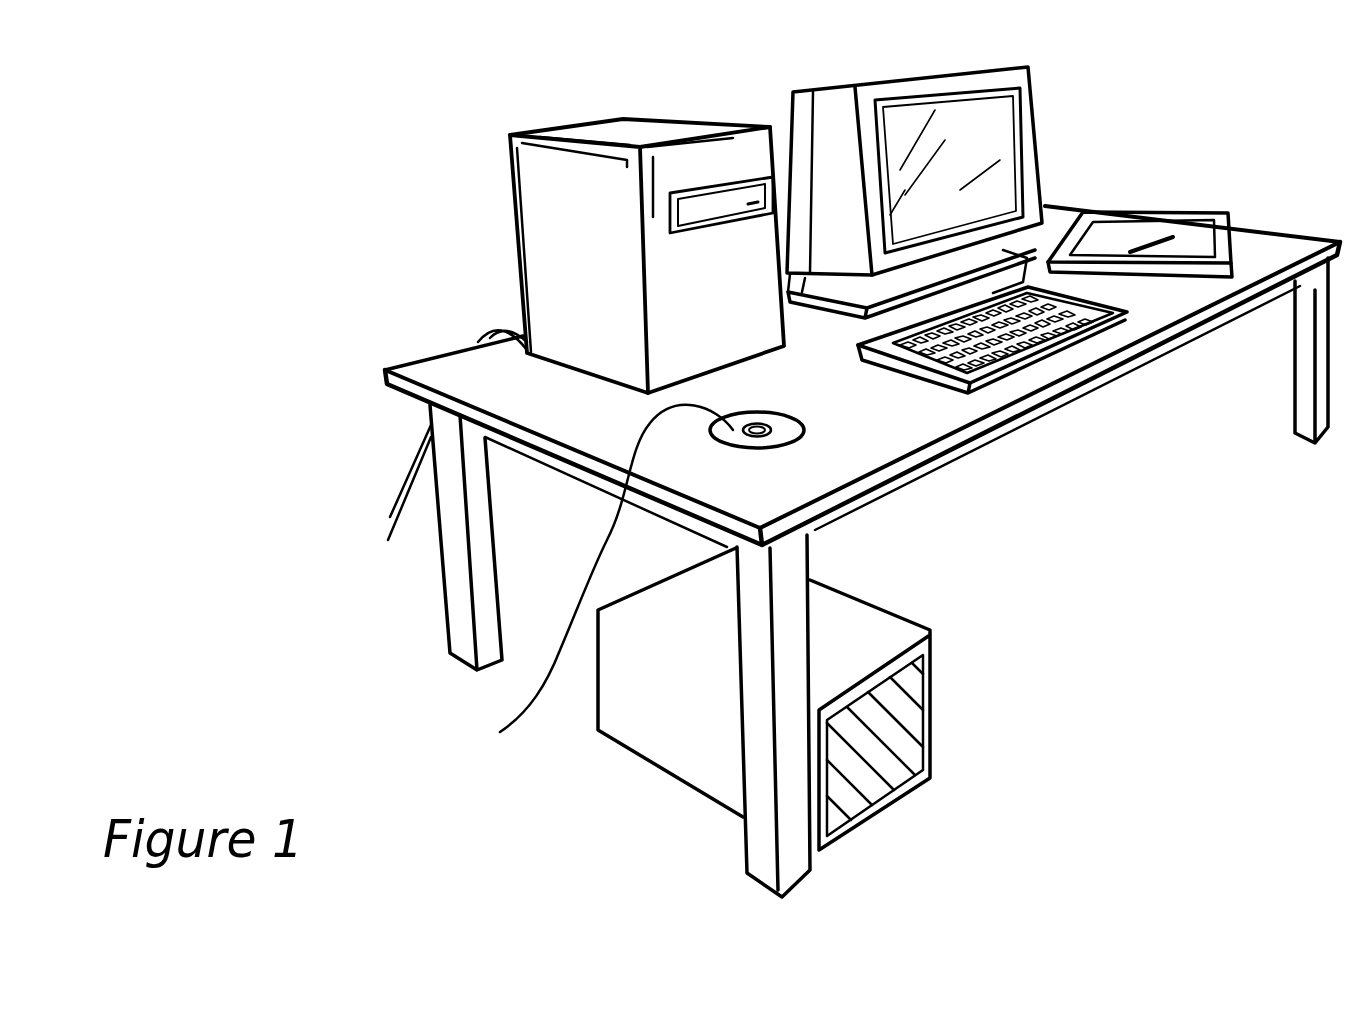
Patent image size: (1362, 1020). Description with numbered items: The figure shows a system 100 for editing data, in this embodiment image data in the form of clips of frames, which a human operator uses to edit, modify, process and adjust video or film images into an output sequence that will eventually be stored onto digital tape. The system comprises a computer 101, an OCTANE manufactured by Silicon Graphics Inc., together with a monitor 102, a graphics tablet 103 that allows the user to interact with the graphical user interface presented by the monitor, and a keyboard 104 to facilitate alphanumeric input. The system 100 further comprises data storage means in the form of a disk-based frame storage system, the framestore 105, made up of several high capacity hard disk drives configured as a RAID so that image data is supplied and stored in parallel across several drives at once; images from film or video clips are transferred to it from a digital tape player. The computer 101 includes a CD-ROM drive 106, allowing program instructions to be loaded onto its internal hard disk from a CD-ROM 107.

The system 100 is at (365, 216).
The computer 101 is at (612, 254).
The monitor 102 is at (1000, 148).
The graphics tablet 103 is at (1187, 220).
The keyboard 104 is at (1020, 325).
The framestore 105 is at (932, 630).
The CD-ROM drive 106 is at (720, 200).
The CD-ROM 107 is at (500, 732).